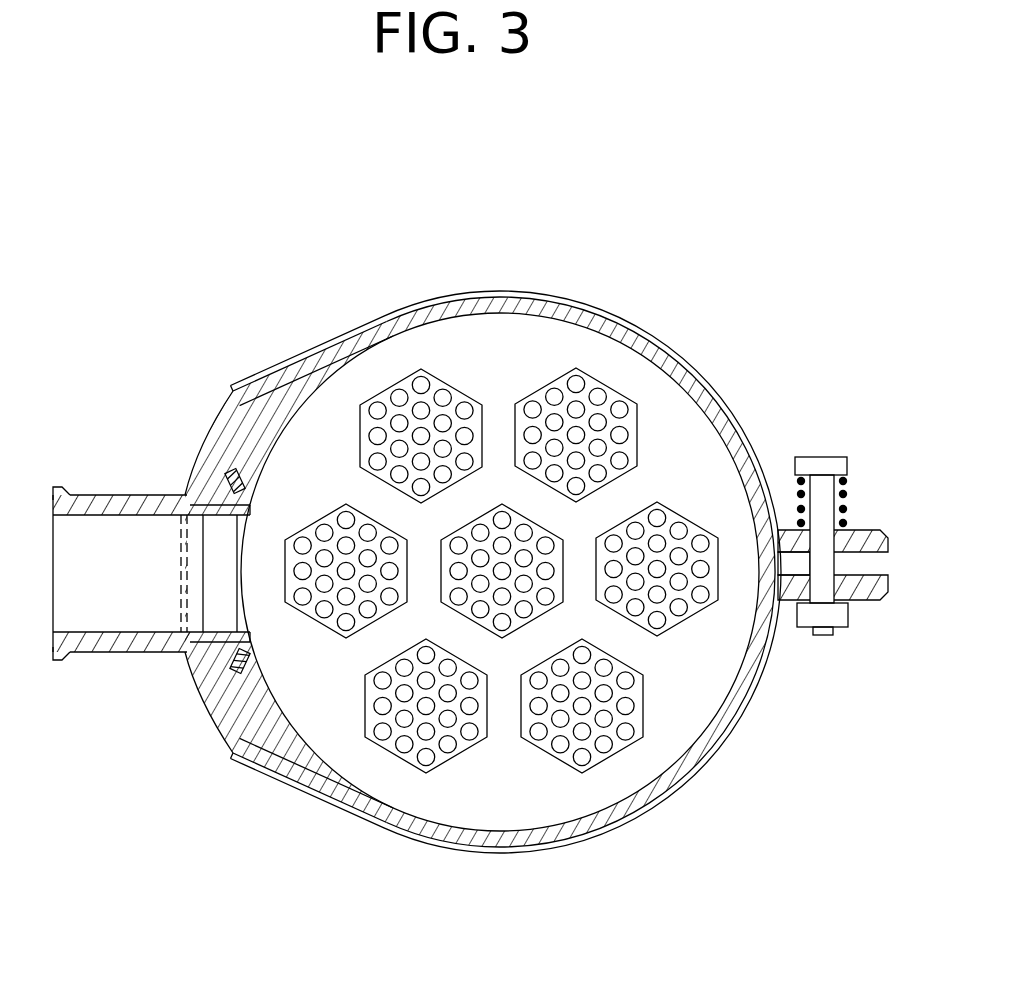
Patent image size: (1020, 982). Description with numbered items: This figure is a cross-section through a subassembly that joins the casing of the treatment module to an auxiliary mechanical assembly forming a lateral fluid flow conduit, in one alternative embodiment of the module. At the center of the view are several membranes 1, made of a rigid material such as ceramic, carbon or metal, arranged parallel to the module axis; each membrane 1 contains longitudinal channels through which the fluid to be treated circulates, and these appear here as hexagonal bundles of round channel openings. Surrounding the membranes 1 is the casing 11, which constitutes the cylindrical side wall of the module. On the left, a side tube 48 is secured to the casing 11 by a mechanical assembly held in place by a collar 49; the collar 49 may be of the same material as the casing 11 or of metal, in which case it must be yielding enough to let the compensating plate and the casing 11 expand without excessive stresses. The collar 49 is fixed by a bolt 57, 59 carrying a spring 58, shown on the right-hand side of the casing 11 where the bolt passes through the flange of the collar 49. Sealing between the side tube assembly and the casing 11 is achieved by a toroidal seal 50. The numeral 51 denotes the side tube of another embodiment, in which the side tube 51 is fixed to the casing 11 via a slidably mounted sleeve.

The membrane 1 is at (460, 392).
The casing 11 is at (320, 363).
The side tube 48 is at (112, 495).
The collar 49 is at (277, 773).
The toroidal seal 50 is at (247, 658).
The side tube 51 is at (222, 685).
The bolt 57 is at (815, 465).
The spring 58 is at (840, 505).
The bolt nut 59 is at (823, 635).